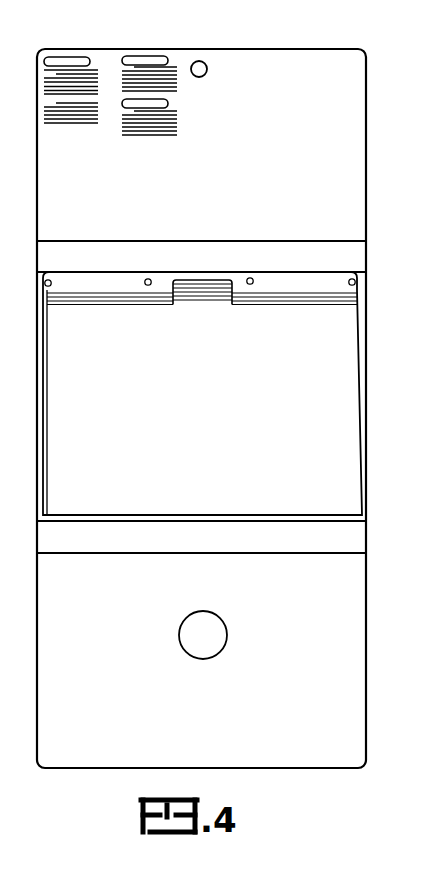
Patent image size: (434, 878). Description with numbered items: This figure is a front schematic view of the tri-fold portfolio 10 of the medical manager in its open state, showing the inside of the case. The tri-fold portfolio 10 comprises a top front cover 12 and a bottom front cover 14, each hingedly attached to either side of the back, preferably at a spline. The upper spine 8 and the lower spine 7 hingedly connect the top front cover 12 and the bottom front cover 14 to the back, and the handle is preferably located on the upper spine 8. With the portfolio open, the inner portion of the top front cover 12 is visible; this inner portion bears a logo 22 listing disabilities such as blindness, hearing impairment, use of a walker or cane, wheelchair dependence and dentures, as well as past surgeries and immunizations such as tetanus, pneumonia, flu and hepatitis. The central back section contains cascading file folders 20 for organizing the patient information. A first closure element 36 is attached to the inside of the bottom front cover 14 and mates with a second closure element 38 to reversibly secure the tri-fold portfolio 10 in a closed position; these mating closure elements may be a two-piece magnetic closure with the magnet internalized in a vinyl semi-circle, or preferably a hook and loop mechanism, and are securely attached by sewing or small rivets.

The tri-fold portfolio 10 is at (46, 788).
The top front cover 12 is at (276, 186).
The bottom front cover 14 is at (280, 727).
The logo 22 is at (158, 147).
The second closure element 38 is at (203, 61).
The upper spine 8 is at (332, 258).
The cascading file folders 20 is at (330, 348).
The lower spine 7 is at (335, 533).
The first closure element 36 is at (190, 617).